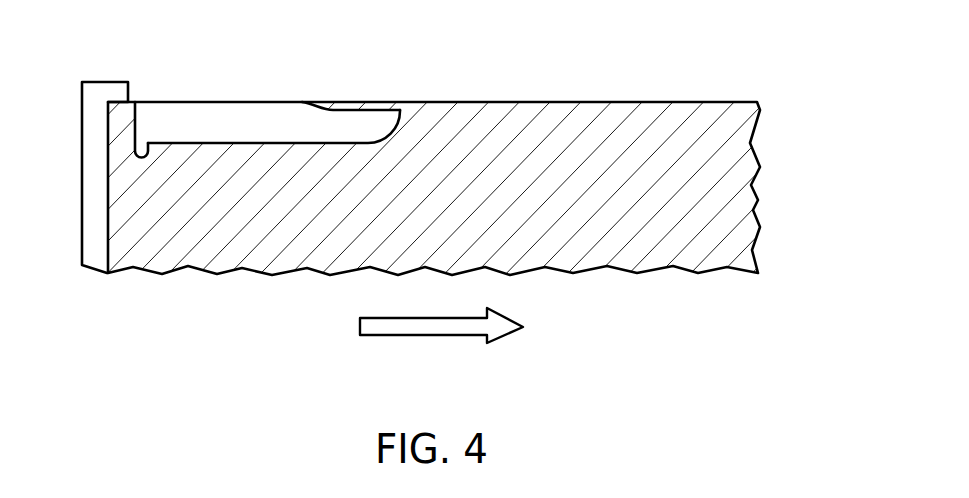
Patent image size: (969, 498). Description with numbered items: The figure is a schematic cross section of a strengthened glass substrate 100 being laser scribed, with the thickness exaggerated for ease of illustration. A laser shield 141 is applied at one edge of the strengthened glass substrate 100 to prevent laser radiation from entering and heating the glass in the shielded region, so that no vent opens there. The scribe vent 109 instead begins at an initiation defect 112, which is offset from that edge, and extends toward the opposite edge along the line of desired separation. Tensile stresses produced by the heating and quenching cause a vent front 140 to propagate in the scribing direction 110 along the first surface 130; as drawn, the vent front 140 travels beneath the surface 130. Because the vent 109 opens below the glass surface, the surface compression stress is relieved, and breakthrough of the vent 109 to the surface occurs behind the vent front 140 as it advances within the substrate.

The strengthened glass substrate 100 is at (470, 143).
The scribe vent 109 is at (283, 118).
The scribing direction 110 is at (437, 337).
The initiation defect 112 is at (142, 100).
The first surface 130 is at (622, 100).
The vent front 140 is at (412, 108).
The laser shield 141 is at (105, 82).